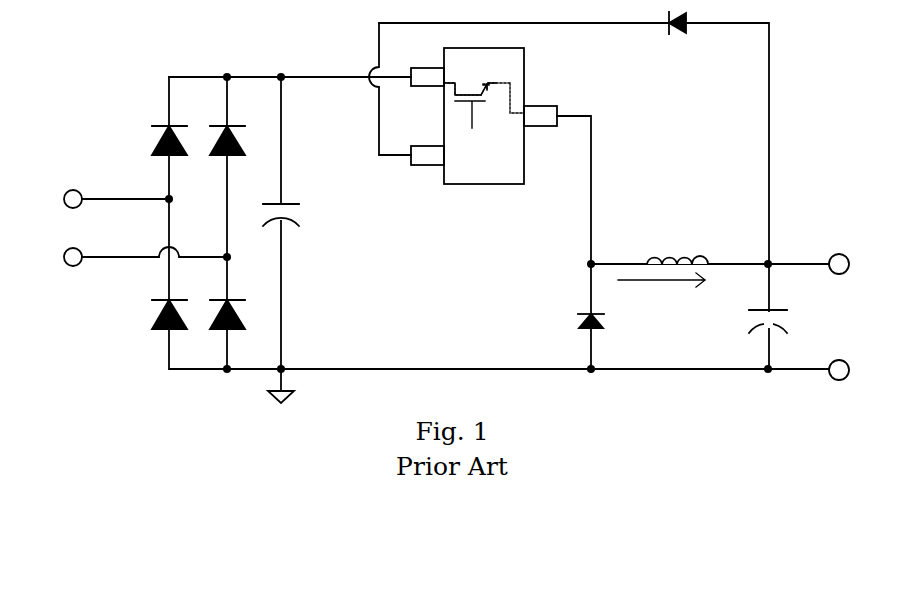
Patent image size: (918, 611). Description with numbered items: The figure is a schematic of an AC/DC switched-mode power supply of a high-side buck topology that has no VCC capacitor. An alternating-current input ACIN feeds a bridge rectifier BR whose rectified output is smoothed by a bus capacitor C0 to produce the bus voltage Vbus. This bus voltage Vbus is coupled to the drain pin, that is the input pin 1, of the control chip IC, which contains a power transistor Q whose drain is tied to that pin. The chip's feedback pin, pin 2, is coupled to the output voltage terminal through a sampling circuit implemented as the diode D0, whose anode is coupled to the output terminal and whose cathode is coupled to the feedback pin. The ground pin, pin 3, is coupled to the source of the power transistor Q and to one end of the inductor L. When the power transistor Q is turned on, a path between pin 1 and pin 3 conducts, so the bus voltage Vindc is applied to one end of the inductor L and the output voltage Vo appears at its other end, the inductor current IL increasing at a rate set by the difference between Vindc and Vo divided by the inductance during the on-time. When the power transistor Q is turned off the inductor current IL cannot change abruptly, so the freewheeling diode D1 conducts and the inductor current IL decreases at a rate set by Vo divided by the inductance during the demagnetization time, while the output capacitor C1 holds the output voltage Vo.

The AC input terminals ACIN is at (127, 228).
The bridge rectifier diodes BR is at (198, 227).
The bus capacitor C0 is at (301, 223).
The bus voltage Vbus is at (330, 88).
The control chip IC is at (484, 142).
The drain pin DRAIN (PIN1) 1 is at (427, 77).
The feedback pin FB (PIN2) 2 is at (427, 155).
The ground pin GND (PIN3) 3 is at (540, 116).
The power transistor Q is at (484, 105).
The diode D0 is at (672, 44).
The bus voltage Vindc is at (577, 275).
The inductor L is at (677, 250).
The inductor current IL is at (661, 291).
The freewheeling diode D1 is at (572, 329).
The output capacitor C1 is at (742, 316).
The output voltage Vo is at (833, 317).